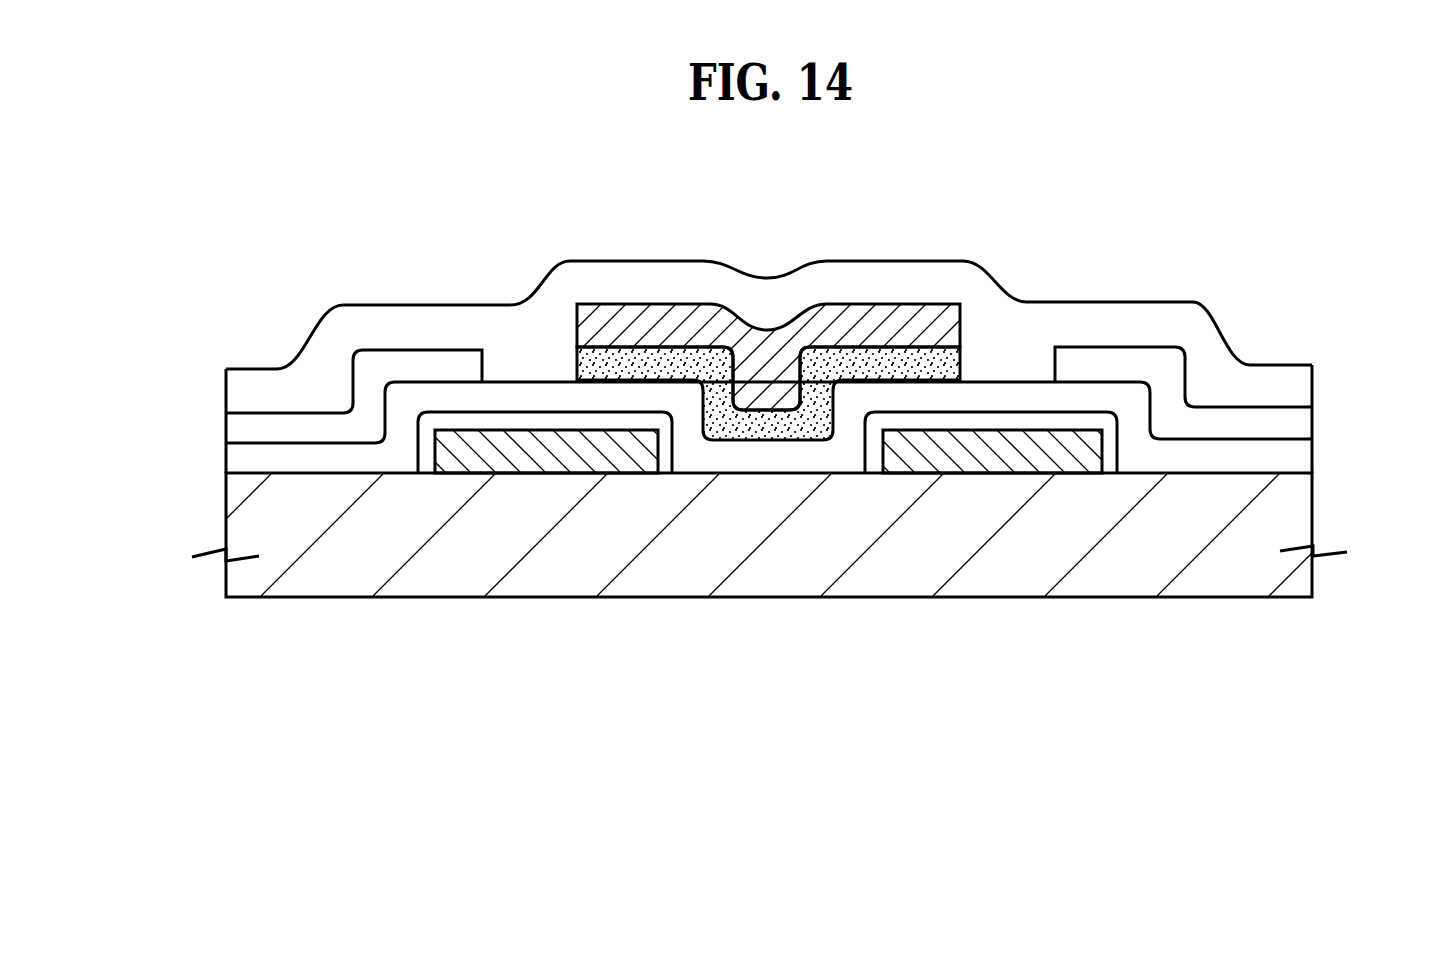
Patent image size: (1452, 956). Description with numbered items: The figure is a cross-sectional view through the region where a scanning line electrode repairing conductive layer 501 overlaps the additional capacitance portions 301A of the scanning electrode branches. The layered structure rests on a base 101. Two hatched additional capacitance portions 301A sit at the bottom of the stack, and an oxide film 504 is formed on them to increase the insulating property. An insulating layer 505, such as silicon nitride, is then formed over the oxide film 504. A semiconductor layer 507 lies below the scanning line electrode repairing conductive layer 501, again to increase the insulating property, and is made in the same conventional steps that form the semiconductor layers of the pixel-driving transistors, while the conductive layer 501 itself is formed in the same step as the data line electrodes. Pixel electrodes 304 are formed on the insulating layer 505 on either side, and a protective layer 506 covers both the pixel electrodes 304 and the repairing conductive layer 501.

The substrate 101 is at (1295, 500).
The additional capacitance portion 301A is at (622, 448).
The pixel electrode 304 is at (245, 393).
The scanning line electrode repairing conductive layer 501 is at (860, 330).
The oxide film 504 is at (430, 448).
The insulating layer 505 is at (1295, 450).
The protective layer 506 is at (1295, 383).
The semiconductor layer 507 is at (930, 360).